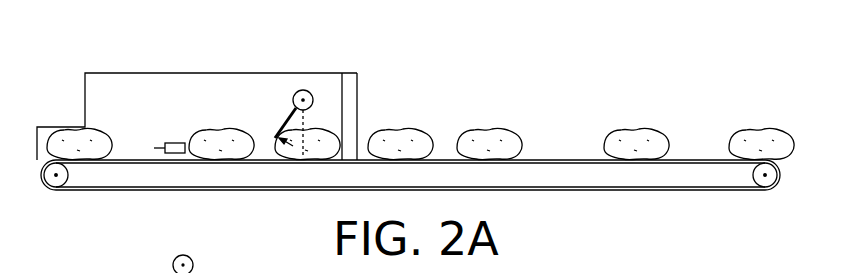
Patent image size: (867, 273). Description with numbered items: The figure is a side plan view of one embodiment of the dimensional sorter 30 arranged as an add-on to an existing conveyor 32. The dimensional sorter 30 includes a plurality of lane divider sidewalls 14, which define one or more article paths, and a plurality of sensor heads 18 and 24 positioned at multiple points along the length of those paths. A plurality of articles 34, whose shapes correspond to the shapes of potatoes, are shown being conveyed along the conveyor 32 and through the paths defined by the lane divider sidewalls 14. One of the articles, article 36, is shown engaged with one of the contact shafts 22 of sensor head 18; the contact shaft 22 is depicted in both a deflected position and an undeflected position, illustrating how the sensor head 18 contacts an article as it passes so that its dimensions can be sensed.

The lane divider sidewall 14 is at (137, 73).
The sensor head 18 is at (303, 90).
The contact shaft 22 is at (275, 137).
The sensor head 24 is at (176, 143).
The dimensional sorter 30 is at (333, 55).
The conveyor 32 is at (698, 162).
The article 34 is at (630, 130).
The article 36 is at (326, 127).